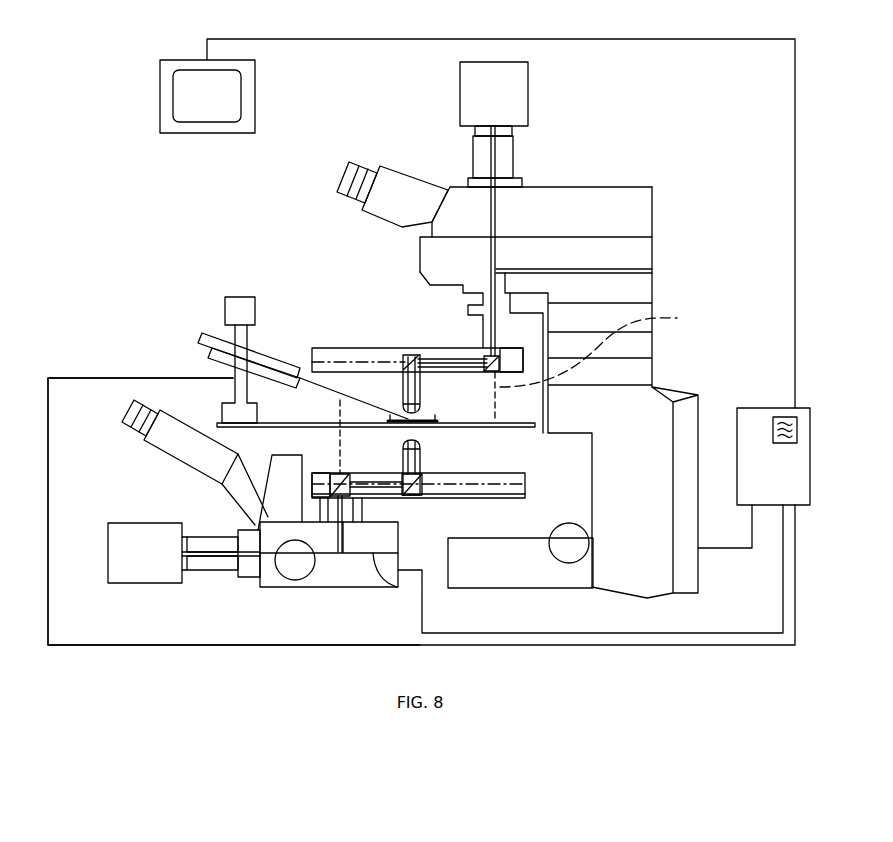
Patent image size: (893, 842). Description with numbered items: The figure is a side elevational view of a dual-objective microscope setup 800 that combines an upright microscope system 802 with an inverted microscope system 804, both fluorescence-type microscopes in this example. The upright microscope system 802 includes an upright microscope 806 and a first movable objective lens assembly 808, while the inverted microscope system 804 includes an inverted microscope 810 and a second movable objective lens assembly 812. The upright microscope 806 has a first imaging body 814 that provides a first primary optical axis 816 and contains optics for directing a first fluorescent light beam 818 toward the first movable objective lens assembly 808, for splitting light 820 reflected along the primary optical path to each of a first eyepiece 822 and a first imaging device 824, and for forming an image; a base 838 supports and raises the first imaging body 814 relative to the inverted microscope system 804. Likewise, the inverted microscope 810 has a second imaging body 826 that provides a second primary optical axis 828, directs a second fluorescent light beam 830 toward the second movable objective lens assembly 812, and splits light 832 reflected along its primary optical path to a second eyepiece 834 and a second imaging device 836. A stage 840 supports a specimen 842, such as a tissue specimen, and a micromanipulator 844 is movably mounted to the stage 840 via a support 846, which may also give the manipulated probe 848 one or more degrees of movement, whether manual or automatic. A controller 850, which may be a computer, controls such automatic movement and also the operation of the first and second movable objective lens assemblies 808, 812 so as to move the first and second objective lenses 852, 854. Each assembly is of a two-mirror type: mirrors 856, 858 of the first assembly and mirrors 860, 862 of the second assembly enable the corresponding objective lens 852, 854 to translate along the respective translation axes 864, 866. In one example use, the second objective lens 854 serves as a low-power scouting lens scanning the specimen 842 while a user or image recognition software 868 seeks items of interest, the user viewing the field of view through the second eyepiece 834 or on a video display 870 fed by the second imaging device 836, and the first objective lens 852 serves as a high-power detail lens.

The microscope setup 800 is at (136, 154).
The upright microscope system 802 is at (614, 56).
The inverted microscope system 804 is at (184, 628).
The upright microscope 806 is at (628, 187).
The first movable objective lens assembly 808 is at (367, 320).
The inverted microscope 810 is at (320, 593).
The second movable objective lens assembly 812 is at (474, 468).
The first imaging body 814 is at (555, 198).
The first primary optical axis 816 is at (603, 348).
The first fluorescent light beam 818 is at (622, 268).
The light 820 is at (489, 212).
The first eyepiece 822 is at (392, 166).
The first imaging device 824 is at (493, 62).
The second imaging body 826 is at (268, 530).
The second primary optical axis 828 is at (333, 410).
The second fluorescent light beam 830 is at (398, 593).
The light 832 is at (258, 530).
The second eyepiece 834 is at (190, 405).
The second imaging device 836 is at (108, 553).
The base 838 is at (687, 560).
The stage 840 is at (468, 418).
The specimen 842 is at (430, 418).
The micromanipulator 844 is at (283, 362).
The support 846 is at (228, 305).
The probe 848 is at (358, 451).
The controller 850 is at (810, 478).
The first objective lens 852 is at (402, 393).
The second objective lens 854 is at (410, 487).
The mirror 856 is at (408, 355).
The mirror 858 is at (488, 362).
The mirror 860 is at (335, 483).
The mirror 862 is at (418, 494).
The translation axis 864 is at (348, 362).
The translation axis 866 is at (518, 499).
The image recognition software 868 is at (780, 417).
The video display 870 is at (175, 60).